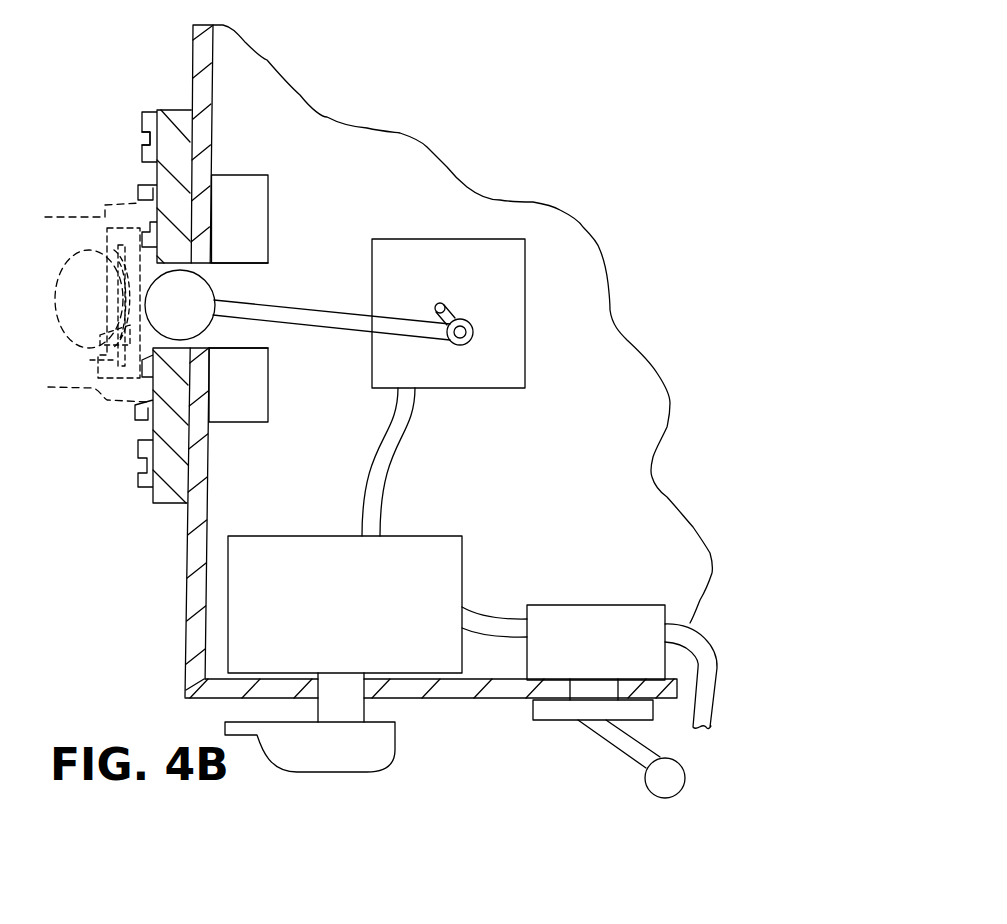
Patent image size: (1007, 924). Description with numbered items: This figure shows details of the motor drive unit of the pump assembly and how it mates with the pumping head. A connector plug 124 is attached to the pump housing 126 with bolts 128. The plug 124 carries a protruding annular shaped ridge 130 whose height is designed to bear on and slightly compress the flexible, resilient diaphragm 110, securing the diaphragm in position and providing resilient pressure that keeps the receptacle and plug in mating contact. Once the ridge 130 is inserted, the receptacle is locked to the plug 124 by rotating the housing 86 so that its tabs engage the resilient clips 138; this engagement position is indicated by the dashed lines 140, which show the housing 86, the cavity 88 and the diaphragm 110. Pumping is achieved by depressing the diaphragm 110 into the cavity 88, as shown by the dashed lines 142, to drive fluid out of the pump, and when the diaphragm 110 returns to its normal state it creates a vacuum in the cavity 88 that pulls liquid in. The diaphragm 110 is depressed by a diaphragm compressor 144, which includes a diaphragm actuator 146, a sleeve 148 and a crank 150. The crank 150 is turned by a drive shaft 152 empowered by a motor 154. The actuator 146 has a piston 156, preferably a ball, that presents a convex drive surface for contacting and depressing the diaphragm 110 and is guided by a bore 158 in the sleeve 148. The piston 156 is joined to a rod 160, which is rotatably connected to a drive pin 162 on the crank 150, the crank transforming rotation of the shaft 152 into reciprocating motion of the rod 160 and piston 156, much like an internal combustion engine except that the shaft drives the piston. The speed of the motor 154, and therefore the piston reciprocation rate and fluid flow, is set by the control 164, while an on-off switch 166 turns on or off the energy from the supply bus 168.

The housing 86 is at (62, 376).
The cavity 88 is at (95, 316).
The diaphragm 110 is at (124, 326).
The connector plug 124 is at (120, 434).
The pump housing 126 is at (187, 647).
The bolts 128 is at (143, 112).
The annular shaped ridge 130 is at (112, 229).
The resilient clips 138 is at (142, 183).
The dashed lines 140 is at (81, 213).
The dashed lines 142 is at (100, 283).
The diaphragm compressor 144 is at (322, 350).
The diaphragm actuator 146 is at (252, 290).
The sleeve 148 is at (250, 188).
The crank 150 is at (452, 314).
The drive shaft 152 is at (442, 303).
The motor 154 is at (468, 255).
The piston 156 is at (203, 316).
The bore 158 is at (259, 346).
The rod 160 is at (307, 311).
The drive pin 162 is at (466, 344).
The control 164 is at (288, 557).
The on-off switch 166 is at (625, 763).
The supply bus 168 is at (705, 730).